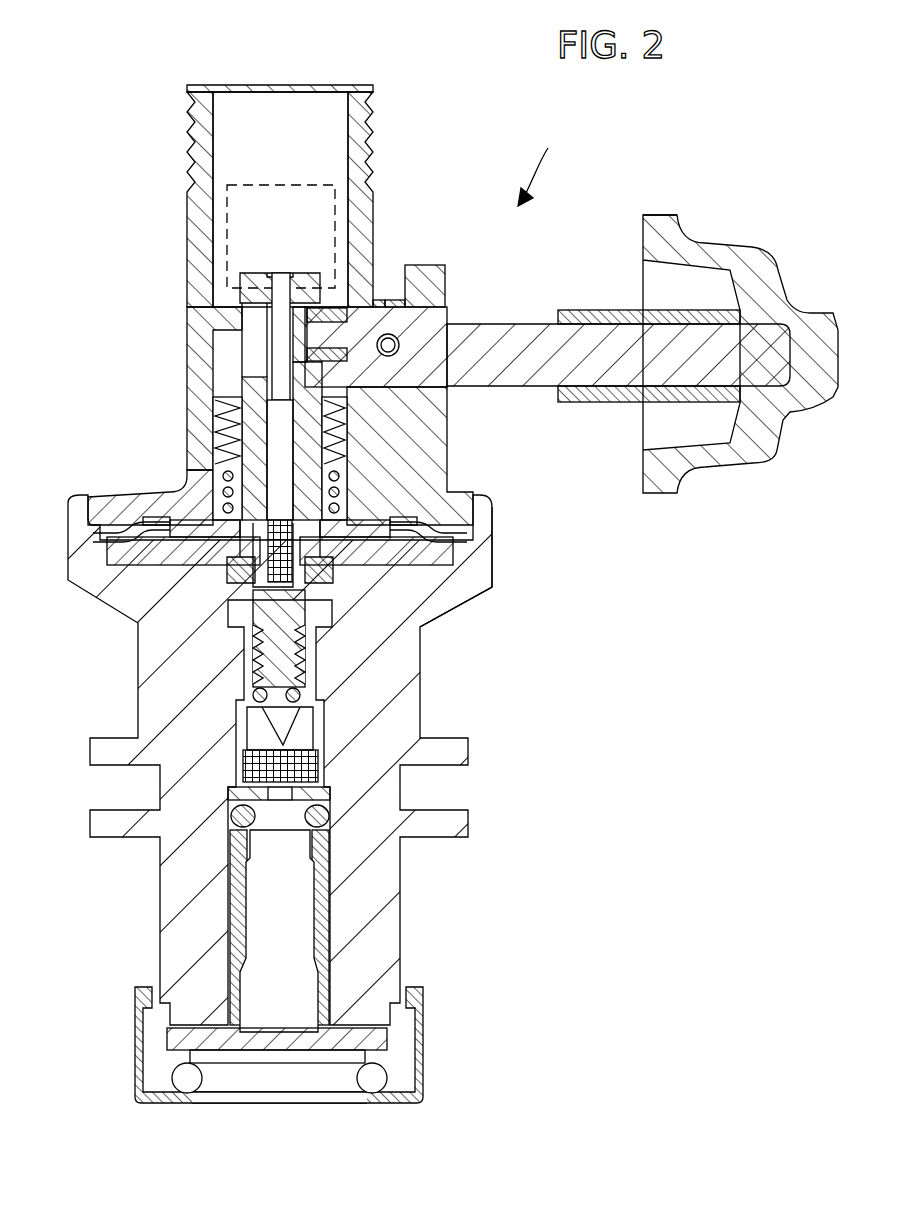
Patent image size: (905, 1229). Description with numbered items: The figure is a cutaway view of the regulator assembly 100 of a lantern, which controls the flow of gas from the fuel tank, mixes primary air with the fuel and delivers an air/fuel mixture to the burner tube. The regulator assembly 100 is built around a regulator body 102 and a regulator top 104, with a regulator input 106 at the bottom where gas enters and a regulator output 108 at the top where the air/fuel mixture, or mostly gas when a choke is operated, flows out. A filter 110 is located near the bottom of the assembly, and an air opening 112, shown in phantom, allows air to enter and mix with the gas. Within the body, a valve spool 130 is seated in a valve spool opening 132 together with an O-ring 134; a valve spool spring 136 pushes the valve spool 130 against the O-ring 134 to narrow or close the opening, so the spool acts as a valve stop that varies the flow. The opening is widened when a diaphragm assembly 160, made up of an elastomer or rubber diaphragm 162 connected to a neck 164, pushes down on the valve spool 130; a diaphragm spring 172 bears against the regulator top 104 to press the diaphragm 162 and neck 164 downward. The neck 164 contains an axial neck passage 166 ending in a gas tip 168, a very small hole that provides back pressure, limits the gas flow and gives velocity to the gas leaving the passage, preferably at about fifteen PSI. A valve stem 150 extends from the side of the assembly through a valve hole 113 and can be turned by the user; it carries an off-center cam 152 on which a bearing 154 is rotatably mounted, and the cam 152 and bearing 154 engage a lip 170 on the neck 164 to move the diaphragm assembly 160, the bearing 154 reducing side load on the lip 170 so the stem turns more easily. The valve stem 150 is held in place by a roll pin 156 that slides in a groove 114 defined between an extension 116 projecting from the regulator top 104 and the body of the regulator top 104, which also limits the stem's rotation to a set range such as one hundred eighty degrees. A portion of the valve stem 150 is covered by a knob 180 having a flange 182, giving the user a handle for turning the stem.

The regulator assembly 100 is at (549, 165).
The regulator body 102 is at (492, 590).
The regulator top 104 is at (450, 420).
The regulator input 106 is at (318, 1103).
The regulator output 108 is at (300, 88).
The filter 110 is at (335, 795).
The air opening 112 is at (220, 203).
The valve hole 113 is at (378, 305).
The groove 114 is at (393, 305).
The extension 116 is at (445, 280).
The valve spool 130 is at (262, 718).
The valve spool opening 132 is at (300, 703).
The O-ring 134 is at (316, 728).
The valve spool spring 136 is at (305, 662).
The valve stem 150 is at (538, 322).
The cam 152 is at (388, 358).
The bearing 154 is at (325, 285).
The roll pin 156 is at (395, 335).
The diaphragm assembly 160 is at (62, 400).
The diaphragm 162 is at (393, 585).
The neck 164 is at (310, 485).
The neck passage 166 is at (270, 333).
The gas tip 168 is at (278, 272).
The lip 170 is at (292, 298).
The diaphragm spring 172 is at (215, 470).
The knob 180 is at (740, 228).
The flange 182 is at (648, 214).